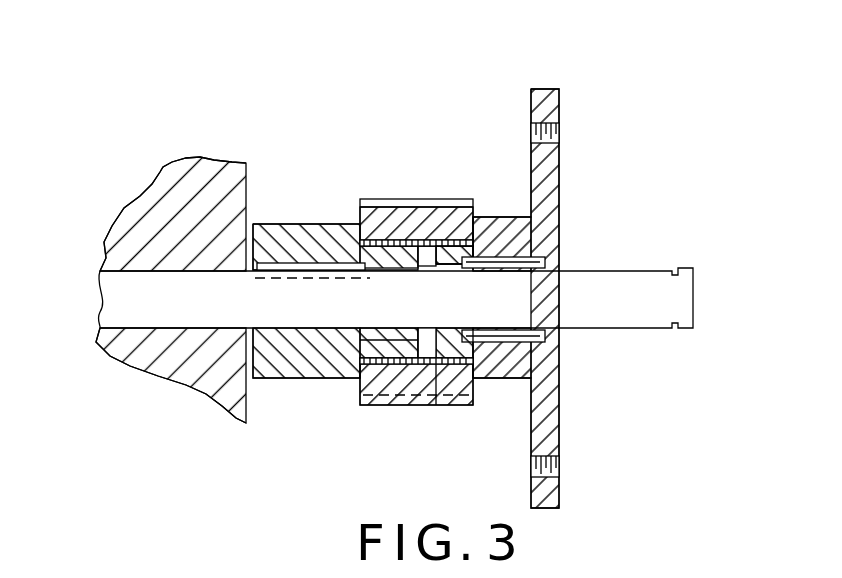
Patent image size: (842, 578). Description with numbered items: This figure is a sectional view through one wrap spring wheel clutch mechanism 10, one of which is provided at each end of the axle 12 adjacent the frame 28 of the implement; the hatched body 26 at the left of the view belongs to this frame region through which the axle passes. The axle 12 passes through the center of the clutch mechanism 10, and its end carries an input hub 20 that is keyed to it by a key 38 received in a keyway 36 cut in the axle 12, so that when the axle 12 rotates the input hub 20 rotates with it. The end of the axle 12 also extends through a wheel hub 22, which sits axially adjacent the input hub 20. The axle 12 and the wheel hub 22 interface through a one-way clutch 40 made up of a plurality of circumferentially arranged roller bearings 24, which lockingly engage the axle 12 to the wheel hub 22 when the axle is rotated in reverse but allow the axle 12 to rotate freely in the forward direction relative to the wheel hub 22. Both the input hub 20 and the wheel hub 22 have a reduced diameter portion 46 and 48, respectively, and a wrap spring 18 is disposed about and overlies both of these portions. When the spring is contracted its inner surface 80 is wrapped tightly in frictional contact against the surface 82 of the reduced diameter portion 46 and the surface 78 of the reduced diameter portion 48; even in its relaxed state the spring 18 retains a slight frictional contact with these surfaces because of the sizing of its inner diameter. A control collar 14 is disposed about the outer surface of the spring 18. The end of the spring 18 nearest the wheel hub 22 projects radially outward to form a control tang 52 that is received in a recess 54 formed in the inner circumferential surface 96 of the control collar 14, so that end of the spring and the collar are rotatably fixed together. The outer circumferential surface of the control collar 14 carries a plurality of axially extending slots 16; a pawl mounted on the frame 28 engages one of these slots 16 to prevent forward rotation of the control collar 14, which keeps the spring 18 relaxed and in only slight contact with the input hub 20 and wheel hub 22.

The clutch mechanism 10 is at (430, 72).
The axle 12 is at (695, 290).
The control collar 14 is at (358, 378).
The axially extending slots 16 is at (398, 206).
The wrap spring 18 is at (357, 242).
The input hub 20 is at (300, 372).
The wheel hub 22 is at (556, 378).
The roller bearings 24 is at (548, 262).
The wall 26 is at (165, 183).
The frame 28 is at (112, 231).
The keyway 36 is at (340, 280).
The key 38 is at (264, 273).
The one-way clutch 40 is at (548, 335).
The reduced diameter portion 46 is at (430, 340).
The reduced diameter portion 48 is at (432, 252).
The control tang 52 is at (442, 243).
The recess 54 is at (472, 222).
The surface 78 is at (452, 398).
The inner surface 80 is at (430, 362).
The surface 82 is at (385, 400).
The inner circumferential surface 96 is at (407, 232).